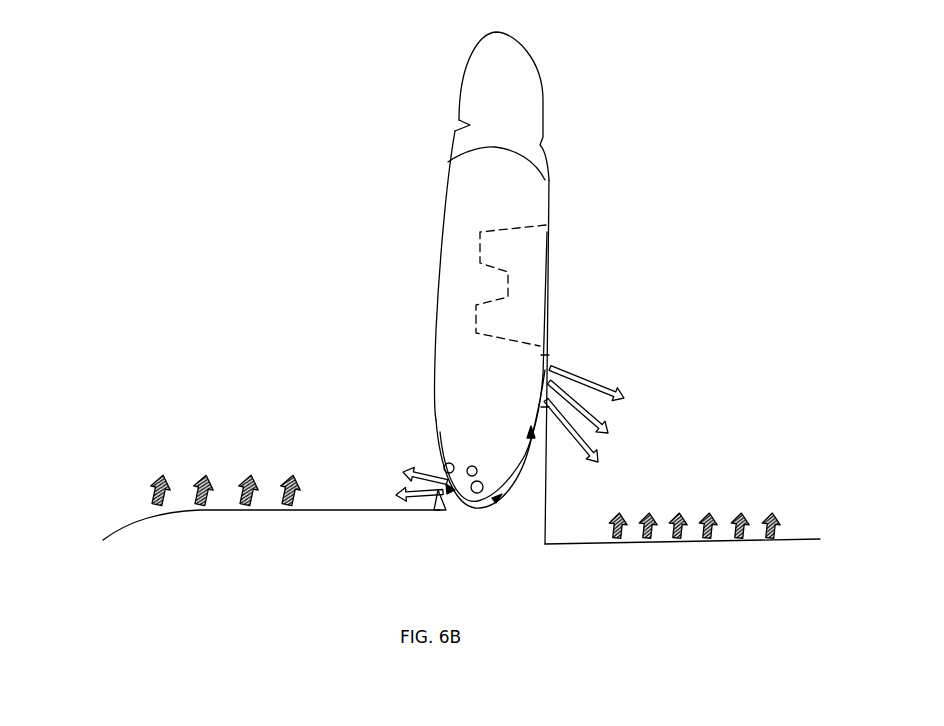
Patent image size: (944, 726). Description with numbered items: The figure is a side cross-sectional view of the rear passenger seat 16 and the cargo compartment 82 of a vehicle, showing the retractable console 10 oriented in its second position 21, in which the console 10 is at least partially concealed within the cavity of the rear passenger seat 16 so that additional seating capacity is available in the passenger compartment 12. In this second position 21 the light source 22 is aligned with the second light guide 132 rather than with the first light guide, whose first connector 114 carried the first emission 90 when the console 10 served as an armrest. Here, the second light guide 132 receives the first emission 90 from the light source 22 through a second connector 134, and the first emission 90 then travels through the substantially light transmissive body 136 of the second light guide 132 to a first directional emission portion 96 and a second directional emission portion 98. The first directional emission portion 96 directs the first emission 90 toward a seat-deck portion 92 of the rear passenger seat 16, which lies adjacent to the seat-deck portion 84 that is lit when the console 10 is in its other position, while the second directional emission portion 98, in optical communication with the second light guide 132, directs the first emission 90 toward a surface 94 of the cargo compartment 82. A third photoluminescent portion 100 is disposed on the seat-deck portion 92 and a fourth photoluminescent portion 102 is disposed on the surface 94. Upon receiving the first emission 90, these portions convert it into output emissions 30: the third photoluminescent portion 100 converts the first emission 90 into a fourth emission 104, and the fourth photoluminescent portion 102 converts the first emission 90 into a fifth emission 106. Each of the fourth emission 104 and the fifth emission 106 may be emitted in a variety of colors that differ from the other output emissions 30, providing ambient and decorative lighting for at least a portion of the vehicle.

The retractable console 10 is at (461, 304).
The passenger compartment 12 is at (208, 170).
The rear passenger seat 16 is at (450, 155).
The second position 21 is at (461, 304).
The light source 22 is at (519, 473).
The output emissions 30 is at (448, 484).
The cargo compartment 82 is at (780, 270).
The seat-deck portion 84 is at (271, 495).
The first emission 90 is at (425, 480).
The seat-deck portion 92 is at (225, 510).
The surface 94 is at (803, 540).
The first directional emission portion 96 is at (442, 500).
The second directional emission portion 98 is at (548, 358).
The third photoluminescent portion 100 is at (271, 495).
The fourth photoluminescent portion 102 is at (689, 537).
The fourth emission 104 is at (140, 472).
The fifth emission 106 is at (783, 498).
The first connector 114 is at (444, 458).
The second light guide 132 is at (497, 503).
The second connector 134 is at (500, 497).
The light transmissive body 136 is at (522, 470).